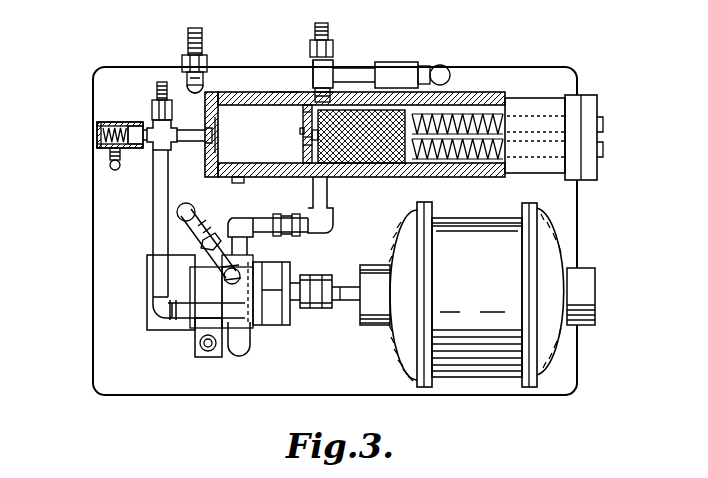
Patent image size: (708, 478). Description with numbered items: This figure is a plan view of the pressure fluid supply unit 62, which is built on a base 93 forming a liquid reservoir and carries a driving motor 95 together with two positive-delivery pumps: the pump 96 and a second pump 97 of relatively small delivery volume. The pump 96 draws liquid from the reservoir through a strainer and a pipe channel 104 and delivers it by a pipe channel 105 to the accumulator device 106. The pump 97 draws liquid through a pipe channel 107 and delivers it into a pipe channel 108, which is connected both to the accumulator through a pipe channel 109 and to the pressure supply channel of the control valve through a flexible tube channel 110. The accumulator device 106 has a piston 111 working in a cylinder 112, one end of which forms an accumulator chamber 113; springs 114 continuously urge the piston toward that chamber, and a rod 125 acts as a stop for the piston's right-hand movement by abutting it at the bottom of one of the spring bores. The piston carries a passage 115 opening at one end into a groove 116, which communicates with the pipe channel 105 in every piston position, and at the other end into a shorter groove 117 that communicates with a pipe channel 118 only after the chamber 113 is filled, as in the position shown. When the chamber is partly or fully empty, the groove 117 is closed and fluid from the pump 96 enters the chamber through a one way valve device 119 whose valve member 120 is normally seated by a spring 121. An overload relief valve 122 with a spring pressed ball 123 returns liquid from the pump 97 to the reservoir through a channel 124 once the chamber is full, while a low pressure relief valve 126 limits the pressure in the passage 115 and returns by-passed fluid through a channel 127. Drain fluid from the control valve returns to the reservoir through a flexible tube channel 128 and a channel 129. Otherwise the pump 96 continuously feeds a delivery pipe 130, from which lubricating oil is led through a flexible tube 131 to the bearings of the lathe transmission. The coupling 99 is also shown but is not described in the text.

The pressure fluid supply unit 62 is at (86, 252).
The base 93 is at (93, 283).
The driving motor 95 is at (477, 294).
The pump 96 is at (152, 322).
The pump 97 is at (190, 283).
The shaft coupling 99 is at (308, 310).
The pipe channel 104 is at (243, 352).
The pipe channel 105 is at (328, 212).
The accumulator device 106 is at (272, 90).
The pipe channel 107 is at (200, 224).
The pipe channel 108 is at (153, 238).
The pipe channel 109 is at (237, 131).
The flexible tube channel 110 is at (155, 92).
The piston 111 is at (302, 113).
The cylinder 112 is at (268, 178).
The accumulator chamber 113 is at (203, 160).
The springs 114 is at (468, 128).
The passage 115 is at (306, 178).
The groove 116 is at (325, 165).
The groove 117 is at (326, 92).
The pipe channel 118 is at (313, 96).
The one way valve device 119 is at (303, 137).
The valve member 120 is at (303, 144).
The spring 121 is at (300, 130).
The overload relief valve 122 is at (105, 118).
The spring pressed ball 123 is at (125, 118).
The channel 124 is at (110, 152).
The rod 125 is at (368, 164).
The relief valve 126 is at (393, 66).
The channel 127 is at (437, 66).
The flexible tube channel 128 is at (182, 44).
The channel 129 is at (205, 96).
The delivery pipe 130 is at (310, 62).
The flexible tube 131 is at (330, 33).